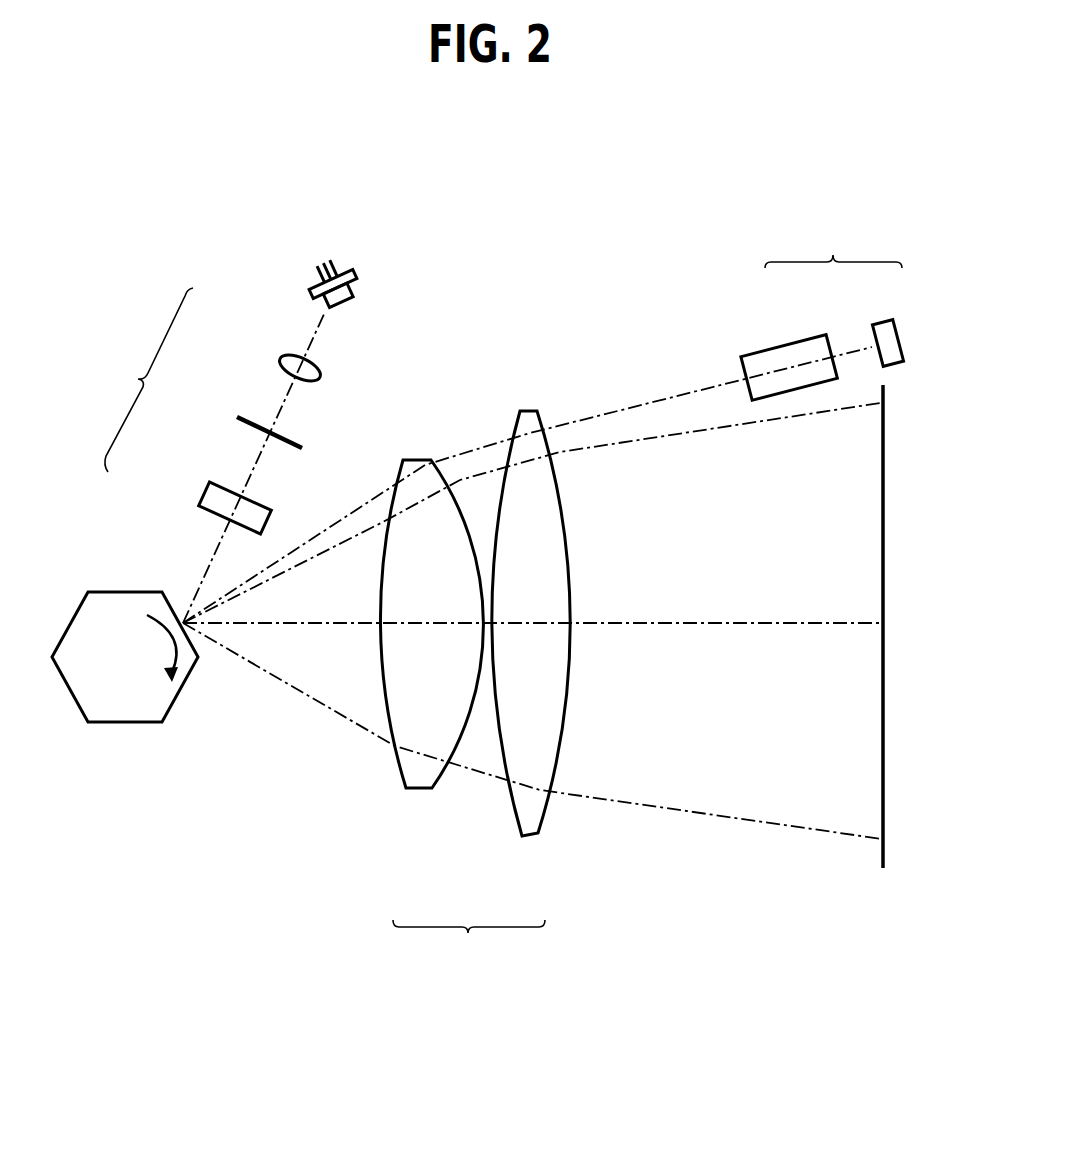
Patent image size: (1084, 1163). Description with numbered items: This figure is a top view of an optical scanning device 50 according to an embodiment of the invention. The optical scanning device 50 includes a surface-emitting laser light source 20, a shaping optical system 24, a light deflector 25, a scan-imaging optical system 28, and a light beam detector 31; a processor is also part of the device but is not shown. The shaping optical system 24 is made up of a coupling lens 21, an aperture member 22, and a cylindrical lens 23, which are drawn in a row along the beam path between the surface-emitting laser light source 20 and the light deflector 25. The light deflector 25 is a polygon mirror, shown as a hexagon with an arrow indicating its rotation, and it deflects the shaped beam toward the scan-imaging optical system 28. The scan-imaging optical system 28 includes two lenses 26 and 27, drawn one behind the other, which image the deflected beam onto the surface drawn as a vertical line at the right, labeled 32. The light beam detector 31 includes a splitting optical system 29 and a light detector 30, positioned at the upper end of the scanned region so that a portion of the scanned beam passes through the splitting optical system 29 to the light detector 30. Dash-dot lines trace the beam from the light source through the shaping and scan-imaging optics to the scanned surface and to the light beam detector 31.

The surface-emitting laser light source 20 is at (318, 293).
The coupling lens 21 is at (285, 358).
The aperture member 22 is at (240, 420).
The cylindrical lens 23 is at (207, 497).
The shaping optical system 24 is at (146, 380).
The light deflector 25 is at (108, 602).
The lens 26 is at (421, 780).
The lens 27 is at (533, 827).
The scan-imaging optical system 28 is at (469, 944).
The splitting optical system 29 is at (778, 357).
The light detector 30 is at (883, 328).
The light beam detector 31 is at (833, 245).
The surface to be scanned 32 is at (885, 473).
The optical scanning device 50 is at (460, 370).